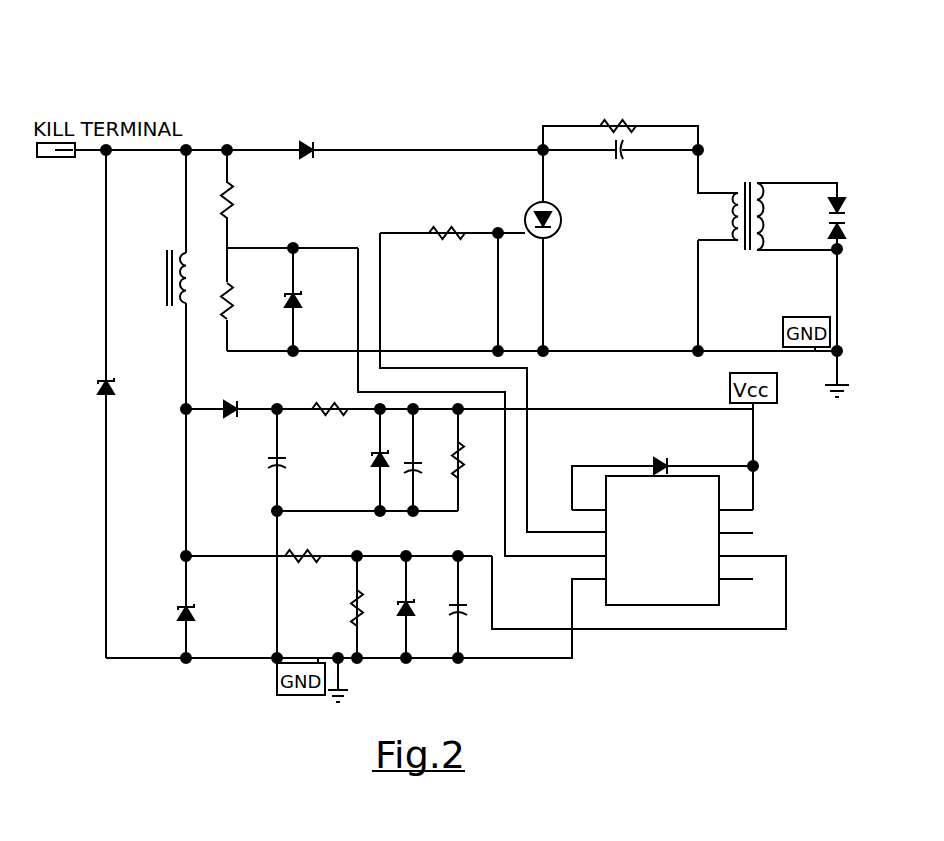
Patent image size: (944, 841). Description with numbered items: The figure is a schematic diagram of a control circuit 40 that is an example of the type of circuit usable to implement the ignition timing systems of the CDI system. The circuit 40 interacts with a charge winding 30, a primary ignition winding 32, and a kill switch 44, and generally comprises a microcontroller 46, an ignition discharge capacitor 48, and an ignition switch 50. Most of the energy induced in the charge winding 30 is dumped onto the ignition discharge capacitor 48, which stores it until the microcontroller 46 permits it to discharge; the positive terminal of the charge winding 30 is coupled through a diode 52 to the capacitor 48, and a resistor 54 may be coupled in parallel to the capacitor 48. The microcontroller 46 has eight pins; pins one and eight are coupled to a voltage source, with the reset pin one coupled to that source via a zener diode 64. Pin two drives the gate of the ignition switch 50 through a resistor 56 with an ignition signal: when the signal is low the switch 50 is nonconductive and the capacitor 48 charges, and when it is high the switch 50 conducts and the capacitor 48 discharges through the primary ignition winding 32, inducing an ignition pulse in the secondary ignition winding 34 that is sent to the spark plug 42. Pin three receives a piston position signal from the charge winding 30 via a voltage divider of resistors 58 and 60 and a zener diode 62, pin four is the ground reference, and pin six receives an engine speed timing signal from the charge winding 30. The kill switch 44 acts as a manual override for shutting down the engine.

The charge winding 30 is at (167, 283).
The primary ignition winding 32 is at (730, 212).
The secondary ignition winding 34 is at (757, 252).
The circuit 40 is at (773, 124).
The spark plug 42 is at (836, 211).
The kill switch 44 is at (57, 157).
The microcontroller 46 is at (660, 606).
The ignition discharge capacitor 48 is at (618, 160).
The ignition switch 50 is at (561, 222).
The diode 52 is at (304, 158).
The resistor 54 is at (614, 120).
The resistor 56 is at (445, 228).
The resistor 58 is at (232, 196).
The resistor 60 is at (232, 298).
The zener diode 62 is at (298, 305).
The zener diode 64 is at (660, 456).